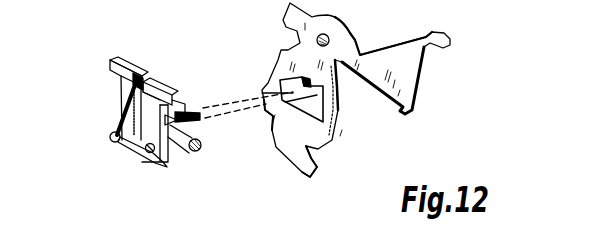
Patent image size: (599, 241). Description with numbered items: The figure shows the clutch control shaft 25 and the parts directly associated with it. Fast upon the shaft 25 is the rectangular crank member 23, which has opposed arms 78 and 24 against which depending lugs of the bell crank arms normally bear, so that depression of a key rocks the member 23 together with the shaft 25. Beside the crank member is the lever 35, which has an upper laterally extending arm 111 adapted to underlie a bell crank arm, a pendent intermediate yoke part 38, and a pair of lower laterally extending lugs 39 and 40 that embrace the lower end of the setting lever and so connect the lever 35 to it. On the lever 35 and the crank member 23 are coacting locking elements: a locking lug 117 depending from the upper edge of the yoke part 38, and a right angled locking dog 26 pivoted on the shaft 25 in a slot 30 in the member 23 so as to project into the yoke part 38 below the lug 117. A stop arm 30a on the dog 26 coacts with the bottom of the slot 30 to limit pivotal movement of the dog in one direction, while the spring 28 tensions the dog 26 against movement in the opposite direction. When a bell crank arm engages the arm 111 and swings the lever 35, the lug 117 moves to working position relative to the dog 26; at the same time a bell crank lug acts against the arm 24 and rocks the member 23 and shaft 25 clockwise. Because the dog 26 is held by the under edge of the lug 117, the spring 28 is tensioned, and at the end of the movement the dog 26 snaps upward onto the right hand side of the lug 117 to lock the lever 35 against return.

The rectangular crank member 23 is at (153, 107).
The arm of crank member 24 is at (173, 93).
The clutch control shaft 25 is at (201, 142).
The locking dog 26 is at (203, 106).
The spring 28 is at (122, 115).
The slot 30 is at (109, 67).
The stop arm 30a is at (132, 143).
The lever 35 is at (339, 85).
The yoke part 38 is at (333, 98).
The lower lug 39 is at (313, 165).
The lower lug 40 is at (280, 142).
The arm of crank member 78 is at (128, 68).
The upper arm of lever 111 is at (360, 53).
The locking lug 117 is at (280, 88).